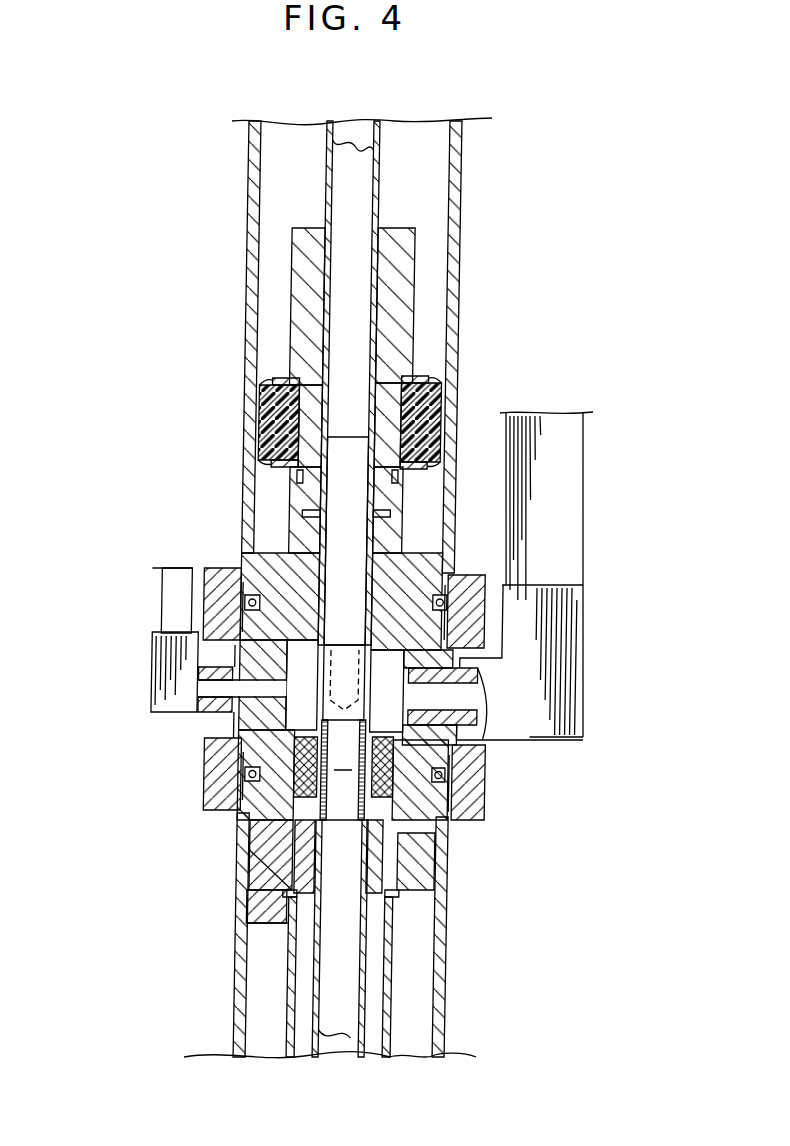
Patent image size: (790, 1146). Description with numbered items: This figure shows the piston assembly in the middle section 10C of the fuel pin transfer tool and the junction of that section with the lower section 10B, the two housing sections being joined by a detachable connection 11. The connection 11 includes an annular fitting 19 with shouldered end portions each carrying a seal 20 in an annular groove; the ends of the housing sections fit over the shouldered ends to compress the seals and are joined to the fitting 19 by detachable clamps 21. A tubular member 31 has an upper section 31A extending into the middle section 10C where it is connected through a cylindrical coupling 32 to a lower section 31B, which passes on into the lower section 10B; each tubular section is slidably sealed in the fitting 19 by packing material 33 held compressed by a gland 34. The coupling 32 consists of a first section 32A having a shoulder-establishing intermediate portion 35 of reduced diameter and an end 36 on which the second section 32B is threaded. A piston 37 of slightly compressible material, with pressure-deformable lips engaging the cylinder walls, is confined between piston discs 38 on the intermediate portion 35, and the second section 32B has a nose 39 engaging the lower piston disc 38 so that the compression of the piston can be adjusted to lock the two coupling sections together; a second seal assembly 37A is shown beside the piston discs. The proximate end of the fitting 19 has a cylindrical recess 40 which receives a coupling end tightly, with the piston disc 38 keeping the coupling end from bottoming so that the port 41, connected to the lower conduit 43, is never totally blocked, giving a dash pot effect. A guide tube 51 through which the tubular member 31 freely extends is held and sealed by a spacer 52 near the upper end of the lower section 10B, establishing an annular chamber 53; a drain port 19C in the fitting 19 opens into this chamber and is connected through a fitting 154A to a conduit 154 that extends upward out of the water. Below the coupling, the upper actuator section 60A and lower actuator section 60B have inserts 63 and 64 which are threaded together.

The middle section 10C is at (247, 178).
The upper actuator section 60A is at (368, 180).
The tubular member 31 is at (392, 208).
The cylindrical coupling 32 is at (325, 524).
The first coupling section 32A is at (292, 257).
The upper section of tubular member 31A is at (380, 297).
The second coupling section 32B is at (304, 535).
The piston 37 is at (226, 423).
The intermediate portion 35 is at (298, 408).
The seal assembly 37A is at (444, 375).
The piston discs 38 is at (287, 377).
The nose 39 is at (289, 478).
The end of first coupling section 36 is at (386, 498).
The insert 63 is at (368, 619).
The insert 64 is at (365, 713).
The cylindrical recess 40 is at (307, 697).
The conduit 154 is at (168, 598).
The fitting 154A is at (163, 692).
The detachable clamps 21 is at (223, 575).
The seal 20 is at (453, 590).
The drain port 19C is at (283, 740).
The lower conduit 43 is at (571, 493).
The detachable connection 11 is at (498, 593).
The port 41 is at (480, 705).
The packing material 33 is at (308, 780).
The annular fitting 19 is at (452, 842).
The gland 34 is at (263, 860).
The spacer 52 is at (272, 924).
The annular chamber 53 is at (293, 992).
The lower section 10B is at (463, 992).
The lower section of tubular member 31B is at (319, 1048).
The lower actuator section 60B is at (365, 1017).
The guide tube 51 is at (409, 1045).